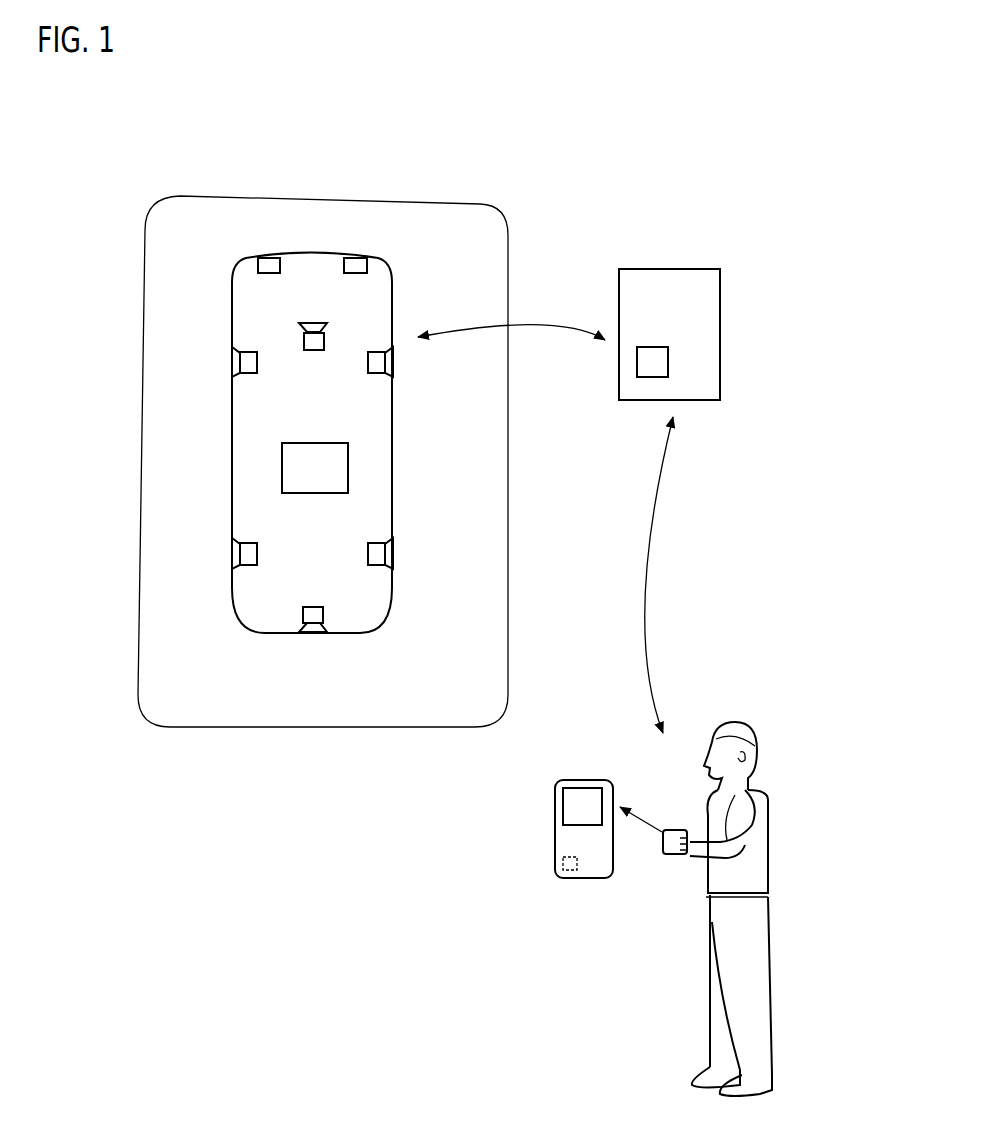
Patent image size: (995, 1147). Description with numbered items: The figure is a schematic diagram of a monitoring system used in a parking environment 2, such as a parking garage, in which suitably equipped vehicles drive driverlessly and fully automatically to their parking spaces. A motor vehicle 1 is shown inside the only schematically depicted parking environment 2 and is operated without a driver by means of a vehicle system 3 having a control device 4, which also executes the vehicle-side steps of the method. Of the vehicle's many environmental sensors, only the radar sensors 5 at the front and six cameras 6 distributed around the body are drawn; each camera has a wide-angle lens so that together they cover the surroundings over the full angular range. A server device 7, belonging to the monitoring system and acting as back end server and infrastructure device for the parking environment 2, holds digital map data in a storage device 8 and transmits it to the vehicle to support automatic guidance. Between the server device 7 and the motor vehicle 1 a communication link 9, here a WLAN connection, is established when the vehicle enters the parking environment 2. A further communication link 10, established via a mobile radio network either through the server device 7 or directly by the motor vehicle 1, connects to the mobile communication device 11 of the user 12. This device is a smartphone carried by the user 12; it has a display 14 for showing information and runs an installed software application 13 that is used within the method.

The motor vehicle 1 is at (236, 288).
The parking environment 2 is at (143, 278).
The vehicle system 3 is at (308, 435).
The control device 4 is at (349, 457).
The radar sensors 5 is at (268, 262).
The cameras 6 is at (248, 362).
The server device 7 is at (685, 290).
The storage device 8 is at (668, 360).
The communication link 9 is at (535, 327).
The communication link 10 is at (648, 540).
The mobile communication device 11 is at (555, 818).
The user 12 is at (778, 722).
The software application 13 is at (563, 867).
The display 14 is at (575, 798).